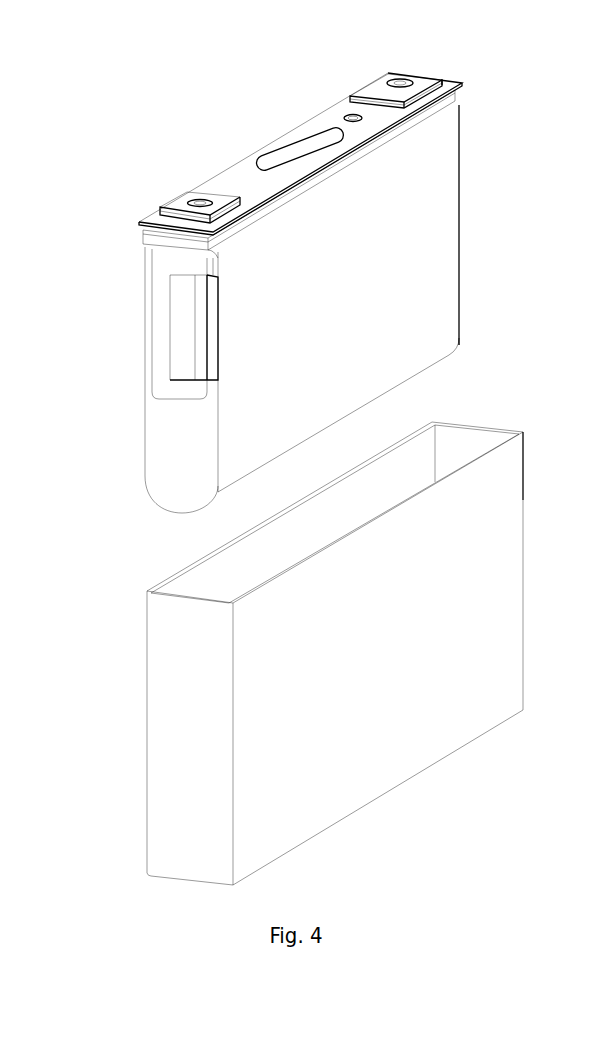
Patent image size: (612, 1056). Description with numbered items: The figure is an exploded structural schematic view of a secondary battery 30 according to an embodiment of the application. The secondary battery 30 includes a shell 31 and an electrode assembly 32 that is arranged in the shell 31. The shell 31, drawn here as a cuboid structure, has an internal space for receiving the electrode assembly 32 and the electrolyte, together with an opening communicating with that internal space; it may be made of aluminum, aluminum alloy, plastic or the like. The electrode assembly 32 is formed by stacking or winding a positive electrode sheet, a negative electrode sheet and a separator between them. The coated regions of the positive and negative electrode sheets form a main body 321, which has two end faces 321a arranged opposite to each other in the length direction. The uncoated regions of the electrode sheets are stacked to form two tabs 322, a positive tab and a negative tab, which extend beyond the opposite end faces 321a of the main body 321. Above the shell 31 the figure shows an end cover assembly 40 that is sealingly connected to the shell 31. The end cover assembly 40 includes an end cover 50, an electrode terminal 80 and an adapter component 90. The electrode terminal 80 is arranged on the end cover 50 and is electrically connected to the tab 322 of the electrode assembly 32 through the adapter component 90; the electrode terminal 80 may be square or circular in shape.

The secondary battery 30 is at (497, 50).
The shell 31 is at (370, 747).
The electrode assembly 32 is at (88, 362).
The main body 321 is at (253, 402).
The end face 321a is at (177, 444).
The tab 322 is at (200, 337).
The end cover assembly 40 is at (205, 120).
The end cover 50 is at (338, 108).
The electrode terminal 80 is at (200, 200).
The adapter component 90 is at (160, 257).